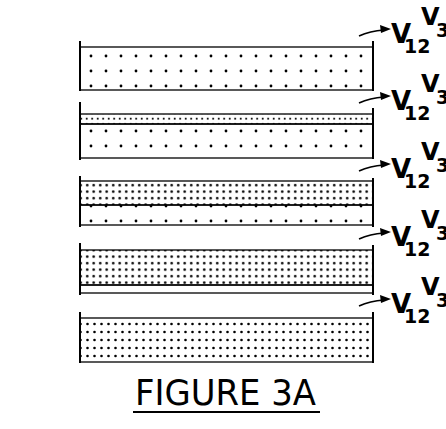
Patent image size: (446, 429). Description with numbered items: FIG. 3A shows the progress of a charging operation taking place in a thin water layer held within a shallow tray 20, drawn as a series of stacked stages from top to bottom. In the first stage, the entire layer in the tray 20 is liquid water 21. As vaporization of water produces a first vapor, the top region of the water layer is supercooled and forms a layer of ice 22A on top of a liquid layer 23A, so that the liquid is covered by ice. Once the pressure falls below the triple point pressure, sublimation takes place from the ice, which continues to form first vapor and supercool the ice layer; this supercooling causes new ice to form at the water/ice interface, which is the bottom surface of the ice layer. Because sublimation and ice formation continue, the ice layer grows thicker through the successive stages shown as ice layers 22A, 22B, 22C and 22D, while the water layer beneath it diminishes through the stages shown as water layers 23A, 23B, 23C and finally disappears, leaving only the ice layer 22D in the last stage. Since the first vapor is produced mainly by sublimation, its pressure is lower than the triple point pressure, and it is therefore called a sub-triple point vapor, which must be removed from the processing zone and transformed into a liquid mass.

The shallow tray 20 is at (88, 71).
The liquid water 21 is at (222, 81).
The layer of ice 22A is at (93, 118).
The liquid layer 23A is at (93, 142).
The ice layer 22B is at (93, 196).
The water layer 23B is at (95, 212).
The ice layer 22C is at (95, 266).
The water layer 23C is at (95, 288).
The ice layer 22D is at (112, 331).